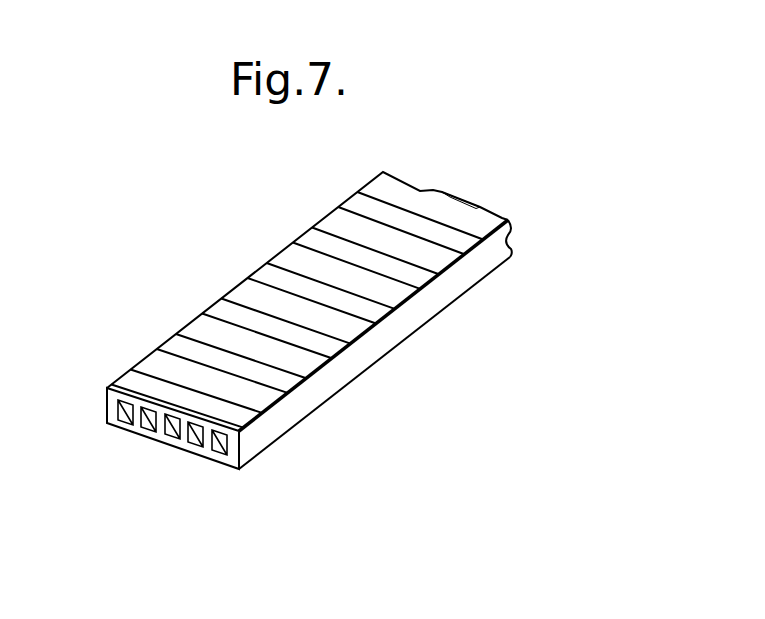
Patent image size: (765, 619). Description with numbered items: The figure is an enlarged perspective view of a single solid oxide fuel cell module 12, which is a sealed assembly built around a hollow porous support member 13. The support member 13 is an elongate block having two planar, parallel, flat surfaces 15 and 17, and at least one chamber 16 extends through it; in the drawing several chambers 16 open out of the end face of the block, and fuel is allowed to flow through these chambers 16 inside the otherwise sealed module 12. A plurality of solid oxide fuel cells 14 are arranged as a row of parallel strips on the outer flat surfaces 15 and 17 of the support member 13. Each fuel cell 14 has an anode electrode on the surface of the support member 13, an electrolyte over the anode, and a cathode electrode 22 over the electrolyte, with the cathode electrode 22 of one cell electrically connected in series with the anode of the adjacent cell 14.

The solid oxide fuel cell module 12 is at (284, 217).
The hollow porous support member 13 is at (477, 265).
The solid oxide fuel cells 14 is at (329, 212).
The flat surface 15 is at (507, 220).
The chamber 16 is at (220, 454).
The flat surface 17 is at (348, 385).
The cathode electrode 22 is at (280, 255).